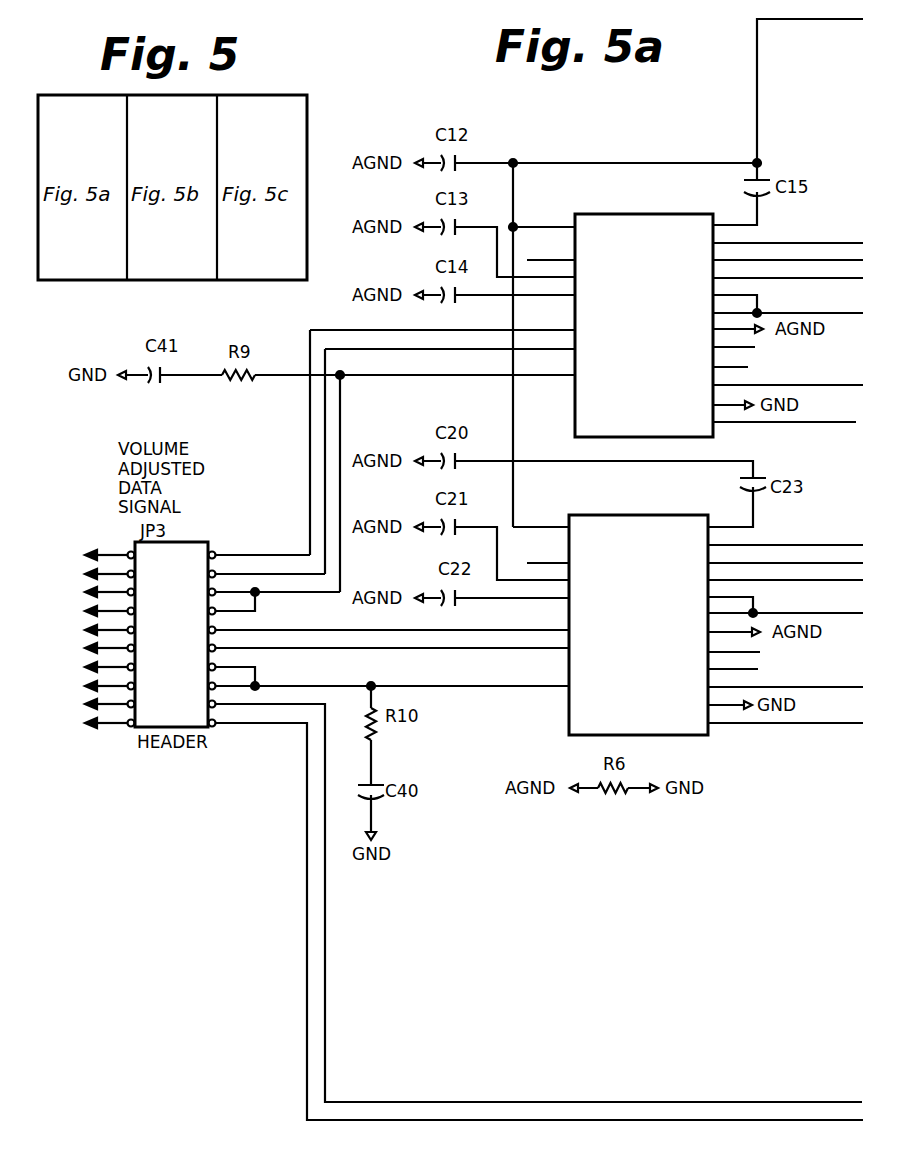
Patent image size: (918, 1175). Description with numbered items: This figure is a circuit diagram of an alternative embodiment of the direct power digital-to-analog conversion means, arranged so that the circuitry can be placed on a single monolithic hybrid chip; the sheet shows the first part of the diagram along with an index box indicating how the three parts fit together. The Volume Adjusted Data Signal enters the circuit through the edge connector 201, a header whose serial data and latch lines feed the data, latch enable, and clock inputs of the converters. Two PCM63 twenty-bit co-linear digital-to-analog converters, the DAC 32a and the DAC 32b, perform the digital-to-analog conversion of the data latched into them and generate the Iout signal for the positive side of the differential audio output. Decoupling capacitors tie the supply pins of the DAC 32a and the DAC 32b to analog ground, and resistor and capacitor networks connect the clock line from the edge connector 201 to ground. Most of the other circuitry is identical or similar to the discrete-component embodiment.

The DAC 32b is at (630, 214).
The DAC 32a is at (569, 718).
The edge connector 201 is at (134, 728).